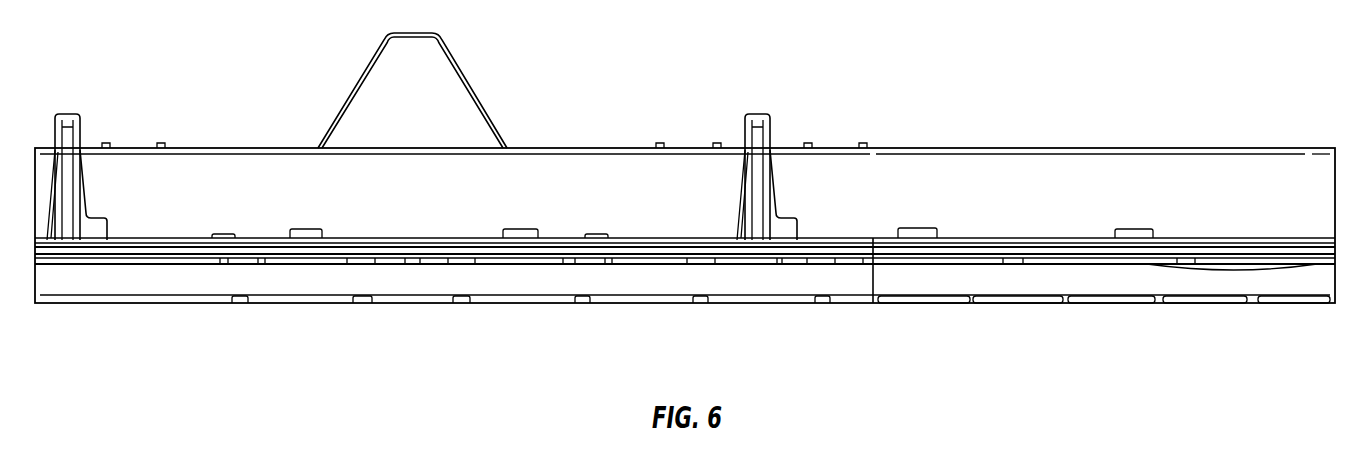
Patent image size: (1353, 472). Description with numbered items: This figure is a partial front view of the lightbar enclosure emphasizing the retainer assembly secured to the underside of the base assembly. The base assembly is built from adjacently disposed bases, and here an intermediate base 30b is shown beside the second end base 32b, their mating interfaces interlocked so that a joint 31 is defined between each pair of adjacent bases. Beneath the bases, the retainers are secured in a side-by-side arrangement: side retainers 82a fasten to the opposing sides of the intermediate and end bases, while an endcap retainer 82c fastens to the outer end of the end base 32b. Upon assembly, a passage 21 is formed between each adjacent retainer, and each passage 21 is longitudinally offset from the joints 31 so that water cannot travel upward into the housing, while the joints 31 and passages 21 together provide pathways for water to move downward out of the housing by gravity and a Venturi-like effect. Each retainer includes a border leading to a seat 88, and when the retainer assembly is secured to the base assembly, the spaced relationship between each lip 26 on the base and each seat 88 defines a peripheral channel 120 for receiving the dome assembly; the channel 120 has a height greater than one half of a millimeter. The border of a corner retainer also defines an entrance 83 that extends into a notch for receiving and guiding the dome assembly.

The passage 21 is at (408, 238).
The lip 26 is at (730, 250).
The seat 88 is at (548, 265).
The peripheral channel 120 is at (650, 265).
The intermediate base 30b is at (547, 170).
The second end base 32b is at (967, 170).
The joint 31 is at (68, 258).
The side retainer 82a is at (170, 280).
The endcap retainer 82c is at (1025, 280).
The entrance 83 is at (1243, 266).